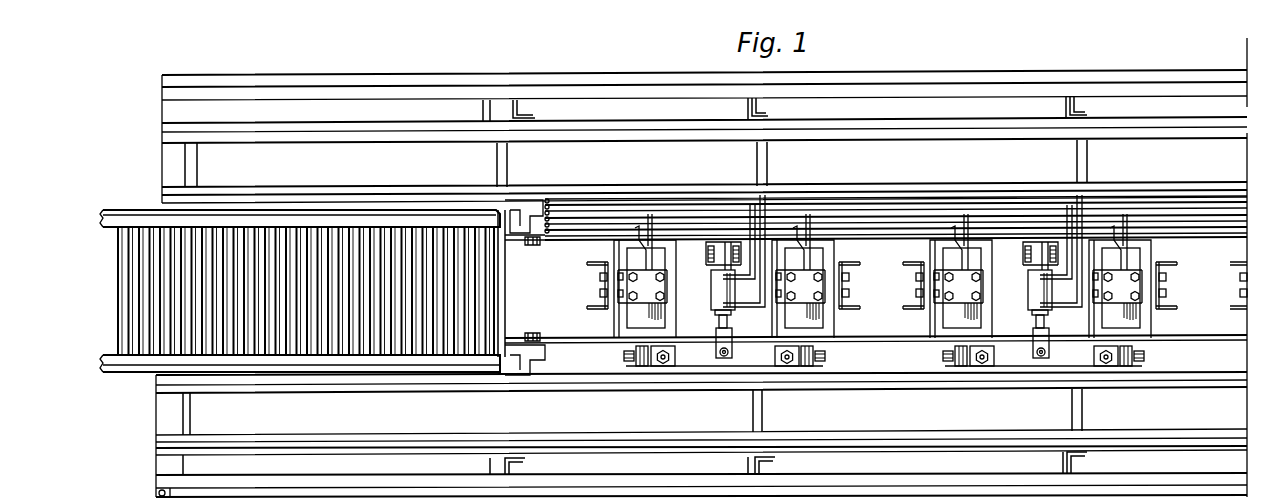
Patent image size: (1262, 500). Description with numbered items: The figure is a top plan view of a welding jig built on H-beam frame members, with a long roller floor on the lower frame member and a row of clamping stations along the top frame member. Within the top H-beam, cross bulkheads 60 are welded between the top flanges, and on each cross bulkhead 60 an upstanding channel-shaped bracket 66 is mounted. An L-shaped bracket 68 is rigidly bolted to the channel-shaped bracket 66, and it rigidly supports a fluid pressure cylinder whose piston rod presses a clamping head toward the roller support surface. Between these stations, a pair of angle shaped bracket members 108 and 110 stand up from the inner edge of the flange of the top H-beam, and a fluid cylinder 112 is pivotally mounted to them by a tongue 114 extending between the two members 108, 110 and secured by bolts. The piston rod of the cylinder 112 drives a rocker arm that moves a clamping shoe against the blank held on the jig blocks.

The cross bulkhead 60 is at (840, 252).
The channel-shaped bracket 66 is at (860, 308).
The L-shaped bracket 68 is at (833, 272).
The angle shaped bracket member 108 is at (707, 246).
The angle shaped bracket member 110 is at (738, 240).
The fluid cylinder 112 is at (712, 299).
The tongue 114 is at (713, 272).